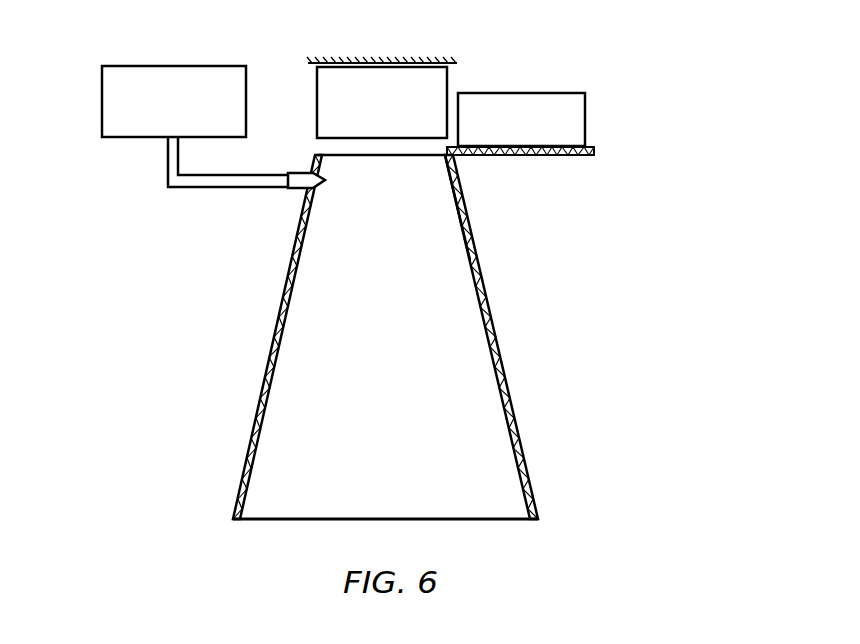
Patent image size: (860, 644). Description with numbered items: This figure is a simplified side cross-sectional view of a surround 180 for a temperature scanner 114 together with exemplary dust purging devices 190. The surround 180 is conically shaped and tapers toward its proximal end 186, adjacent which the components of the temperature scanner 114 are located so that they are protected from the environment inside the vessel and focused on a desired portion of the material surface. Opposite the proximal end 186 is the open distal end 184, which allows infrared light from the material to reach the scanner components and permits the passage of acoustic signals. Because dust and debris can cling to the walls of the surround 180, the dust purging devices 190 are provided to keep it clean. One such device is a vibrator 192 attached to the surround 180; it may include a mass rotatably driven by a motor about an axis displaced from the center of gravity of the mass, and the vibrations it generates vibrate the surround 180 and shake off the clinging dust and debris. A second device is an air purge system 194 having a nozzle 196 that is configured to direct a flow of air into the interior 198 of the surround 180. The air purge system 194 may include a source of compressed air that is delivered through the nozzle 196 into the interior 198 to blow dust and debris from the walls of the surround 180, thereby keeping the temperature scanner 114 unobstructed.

The dust purging device 190 is at (590, 34).
The surround 180 is at (403, 337).
The open distal end 184 is at (534, 491).
The proximal end 186 is at (460, 183).
The interior 198 is at (293, 407).
The air purge system 194 is at (113, 73).
The nozzle 196 is at (298, 190).
The temperature scanner 114 is at (320, 83).
The vibrator 192 is at (573, 93).